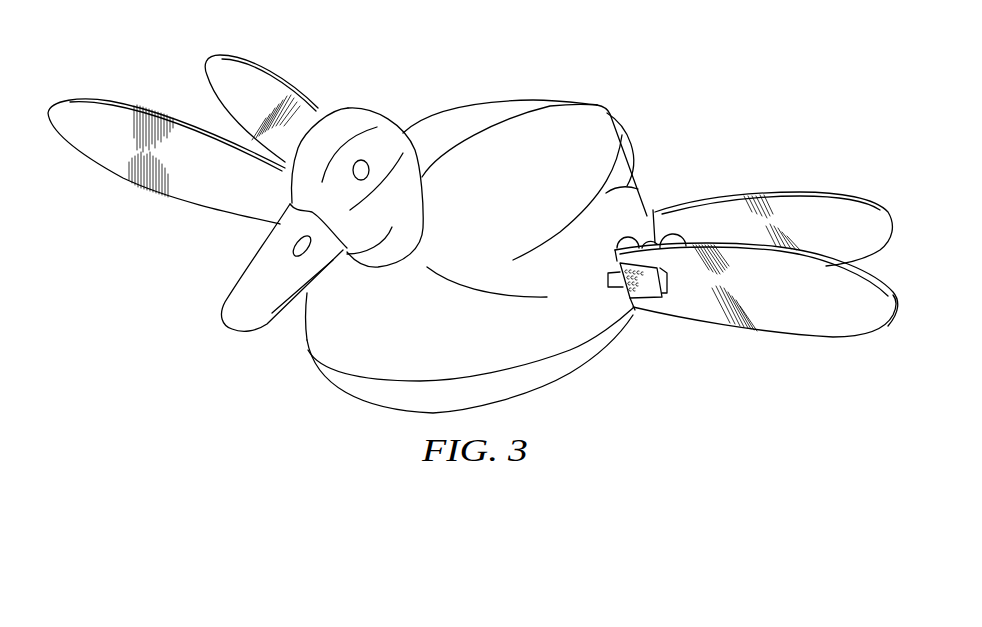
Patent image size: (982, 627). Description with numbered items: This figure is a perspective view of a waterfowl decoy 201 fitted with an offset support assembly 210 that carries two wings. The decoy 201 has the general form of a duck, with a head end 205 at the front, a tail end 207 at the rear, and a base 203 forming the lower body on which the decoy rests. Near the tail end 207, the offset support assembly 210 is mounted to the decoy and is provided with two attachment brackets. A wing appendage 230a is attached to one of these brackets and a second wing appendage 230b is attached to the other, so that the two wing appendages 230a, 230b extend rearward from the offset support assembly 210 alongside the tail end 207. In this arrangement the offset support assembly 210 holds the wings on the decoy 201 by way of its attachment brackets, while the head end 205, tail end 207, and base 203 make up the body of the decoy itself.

The decoy 201 is at (228, 387).
The base 203 is at (342, 382).
The head end 205 is at (357, 117).
The tail end 207 is at (622, 133).
The offset support assembly 210 is at (615, 226).
The wing appendage 230a is at (820, 208).
The wing appendage 230b is at (787, 320).